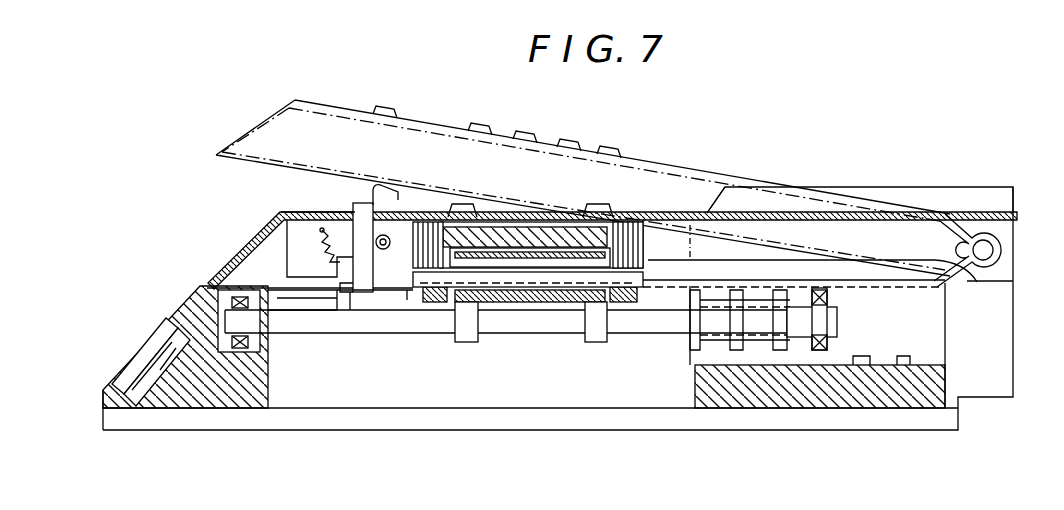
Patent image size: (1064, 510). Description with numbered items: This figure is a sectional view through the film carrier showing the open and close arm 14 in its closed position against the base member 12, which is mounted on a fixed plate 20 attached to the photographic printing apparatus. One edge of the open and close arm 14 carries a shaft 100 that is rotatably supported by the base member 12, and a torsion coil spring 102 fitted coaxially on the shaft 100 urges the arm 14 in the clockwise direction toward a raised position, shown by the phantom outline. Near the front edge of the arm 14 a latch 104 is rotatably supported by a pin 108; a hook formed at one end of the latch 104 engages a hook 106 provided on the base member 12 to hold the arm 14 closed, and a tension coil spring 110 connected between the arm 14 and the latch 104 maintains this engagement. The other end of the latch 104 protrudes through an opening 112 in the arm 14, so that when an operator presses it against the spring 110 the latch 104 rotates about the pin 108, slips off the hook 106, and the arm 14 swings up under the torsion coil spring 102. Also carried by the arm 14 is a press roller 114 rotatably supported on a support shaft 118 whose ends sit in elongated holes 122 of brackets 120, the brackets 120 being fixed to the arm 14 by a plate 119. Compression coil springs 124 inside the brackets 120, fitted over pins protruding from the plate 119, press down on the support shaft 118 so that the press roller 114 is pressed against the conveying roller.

The base member 12 is at (1003, 343).
The open and close arm 14 is at (318, 102).
The fixed plate 20 is at (588, 420).
The shaft 100 is at (990, 249).
The torsion coil spring 102 is at (980, 279).
The latch 104 is at (358, 205).
The hook 106 is at (343, 297).
The pin 108 is at (380, 196).
The tension coil spring 110 is at (337, 247).
The opening 112 is at (346, 214).
The press roller 114 is at (515, 298).
The support shaft 118 is at (567, 280).
The plate 119 is at (541, 272).
The bracket 120 is at (683, 251).
The elongated hole 122 is at (436, 284).
The compression coil spring 124 is at (643, 222).